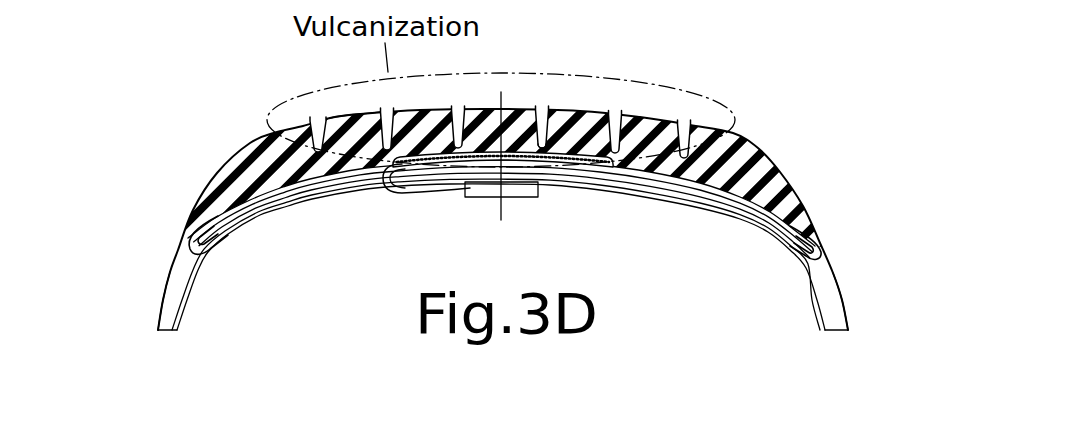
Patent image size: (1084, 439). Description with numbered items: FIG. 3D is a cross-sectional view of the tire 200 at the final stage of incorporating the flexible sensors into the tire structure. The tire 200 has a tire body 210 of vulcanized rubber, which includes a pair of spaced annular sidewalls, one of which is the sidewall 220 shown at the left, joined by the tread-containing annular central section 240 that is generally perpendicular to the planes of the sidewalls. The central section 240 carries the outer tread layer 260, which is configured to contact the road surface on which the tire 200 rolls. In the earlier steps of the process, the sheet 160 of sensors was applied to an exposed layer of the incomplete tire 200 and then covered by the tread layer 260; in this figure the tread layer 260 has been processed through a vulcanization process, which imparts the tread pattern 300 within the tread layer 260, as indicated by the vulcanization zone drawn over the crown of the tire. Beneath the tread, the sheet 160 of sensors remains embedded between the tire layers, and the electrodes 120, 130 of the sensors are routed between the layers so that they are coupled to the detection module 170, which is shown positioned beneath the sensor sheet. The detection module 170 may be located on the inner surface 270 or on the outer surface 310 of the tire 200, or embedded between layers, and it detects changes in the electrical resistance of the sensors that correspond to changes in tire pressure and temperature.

The tire 200 is at (555, 195).
The tire body 210 is at (833, 270).
The annular sidewall 220 is at (157, 305).
The outer tread layer 260 is at (717, 128).
The inner surface of the tire 270 is at (807, 273).
The outer surface of the tire 310 is at (848, 318).
The tread pattern 300 is at (614, 150).
The electrode 120 is at (402, 221).
The electrode 130 is at (405, 193).
The detection module 170 is at (522, 188).
The central section 240 is at (350, 115).
The sheet of sensors 160 is at (545, 128).